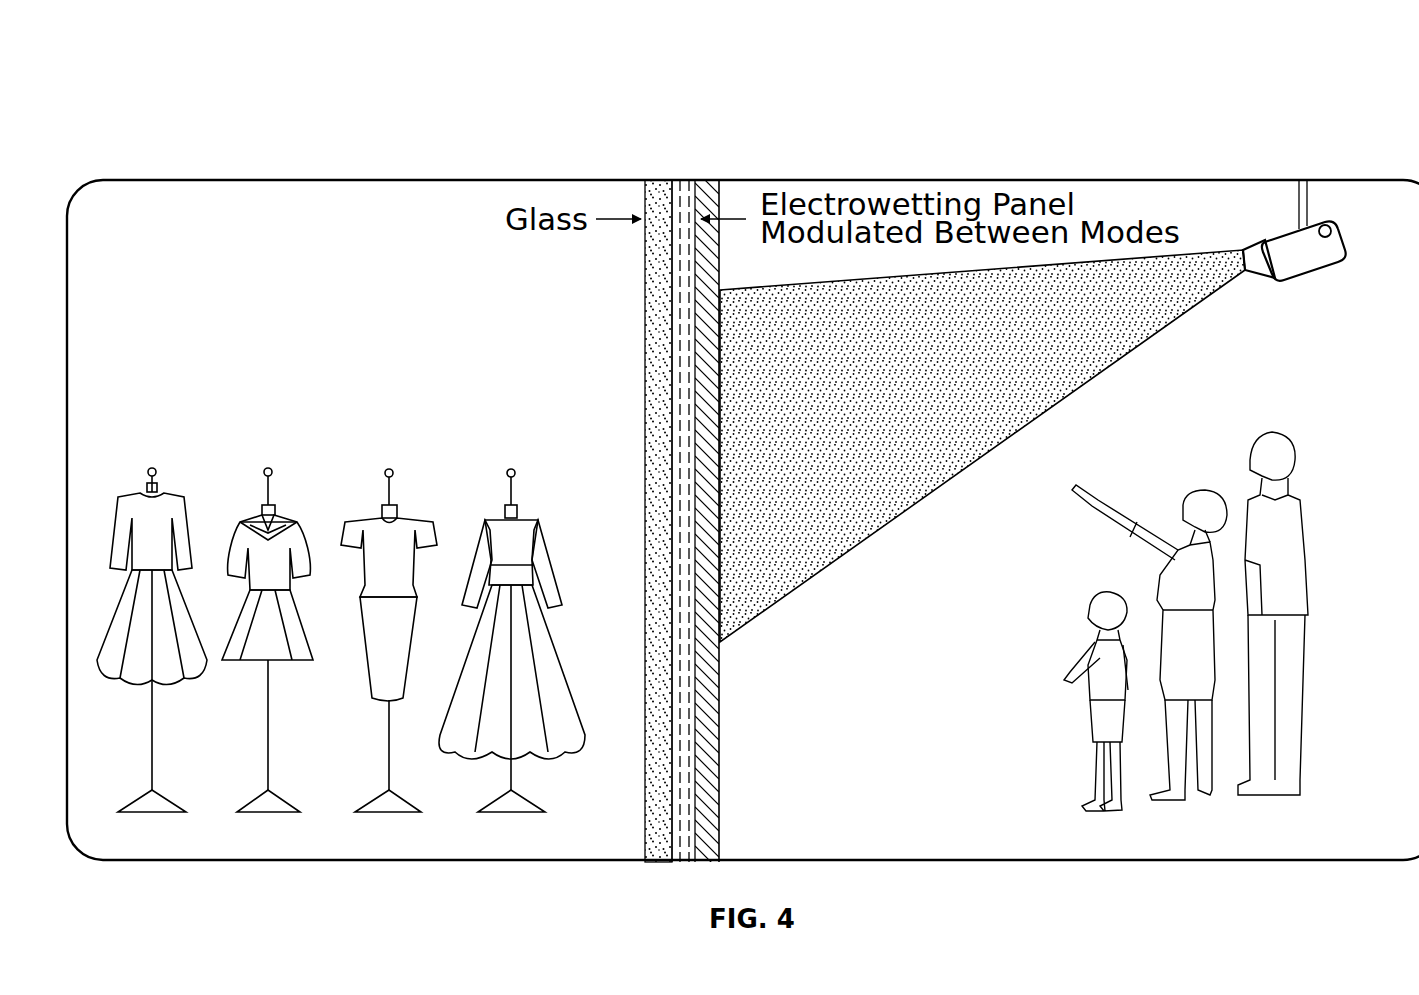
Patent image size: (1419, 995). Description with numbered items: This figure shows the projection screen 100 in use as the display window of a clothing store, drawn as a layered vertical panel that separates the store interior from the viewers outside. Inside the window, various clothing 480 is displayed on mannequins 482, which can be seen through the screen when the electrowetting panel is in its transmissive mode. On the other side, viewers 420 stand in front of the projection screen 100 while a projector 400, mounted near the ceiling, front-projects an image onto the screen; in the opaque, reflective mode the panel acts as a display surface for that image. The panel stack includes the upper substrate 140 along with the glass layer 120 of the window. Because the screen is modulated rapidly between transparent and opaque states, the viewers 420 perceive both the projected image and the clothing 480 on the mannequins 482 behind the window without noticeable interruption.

The projection screen 100 is at (702, 200).
The glass 120 is at (655, 208).
The upper substrate 140 is at (715, 730).
The projector 400 is at (1315, 270).
The viewers 420 is at (1207, 428).
The clothing 480 is at (375, 625).
The mannequins 482 is at (397, 520).